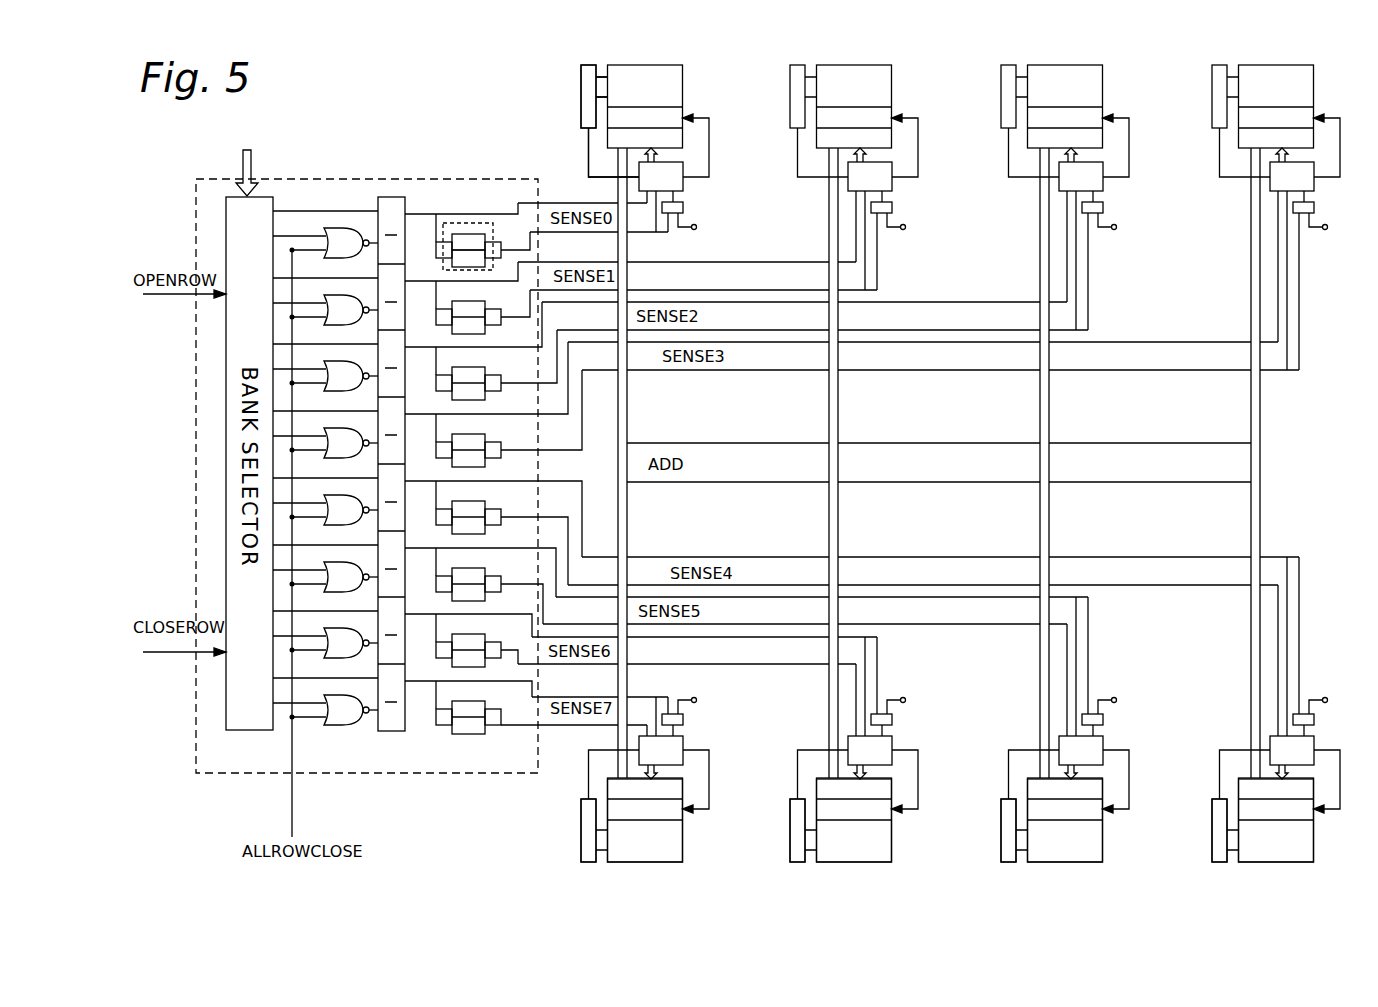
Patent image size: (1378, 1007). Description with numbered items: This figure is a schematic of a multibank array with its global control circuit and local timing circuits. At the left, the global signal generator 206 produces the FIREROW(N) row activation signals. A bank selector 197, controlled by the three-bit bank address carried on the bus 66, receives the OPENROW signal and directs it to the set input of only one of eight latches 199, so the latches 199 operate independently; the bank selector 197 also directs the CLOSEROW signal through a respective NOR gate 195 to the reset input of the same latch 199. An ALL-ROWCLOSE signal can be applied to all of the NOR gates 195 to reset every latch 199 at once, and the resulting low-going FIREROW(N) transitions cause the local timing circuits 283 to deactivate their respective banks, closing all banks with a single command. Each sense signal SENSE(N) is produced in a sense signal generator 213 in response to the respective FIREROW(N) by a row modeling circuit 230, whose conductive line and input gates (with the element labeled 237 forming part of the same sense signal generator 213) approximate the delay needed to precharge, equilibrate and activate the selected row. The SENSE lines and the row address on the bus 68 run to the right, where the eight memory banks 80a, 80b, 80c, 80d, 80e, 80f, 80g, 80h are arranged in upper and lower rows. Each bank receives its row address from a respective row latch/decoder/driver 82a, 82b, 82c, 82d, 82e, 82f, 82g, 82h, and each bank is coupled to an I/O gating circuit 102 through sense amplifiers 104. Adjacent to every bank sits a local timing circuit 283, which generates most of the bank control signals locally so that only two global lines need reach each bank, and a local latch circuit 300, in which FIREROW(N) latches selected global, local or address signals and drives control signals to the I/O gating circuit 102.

The bus 66 is at (238, 160).
The bus 68 is at (605, 430).
The memory bank 80a is at (628, 849).
The memory bank 80b is at (837, 849).
The memory bank 80c is at (1048, 849).
The memory bank 80d is at (1259, 849).
The memory bank 80e is at (645, 106).
The memory bank 80f is at (854, 106).
The memory bank 80g is at (1065, 106).
The memory bank 80h is at (1276, 106).
The row latch/decoder/driver 82a is at (589, 862).
The row latch/decoder/driver 82b is at (798, 862).
The row latch/decoder/driver 82c is at (1009, 862).
The row latch/decoder/driver 82d is at (1220, 862).
The row latch/decoder/driver 82e is at (615, 104).
The row latch/decoder/driver 82f is at (823, 105).
The row latch/decoder/driver 82g is at (1035, 104).
The row latch/decoder/driver 82h is at (1245, 104).
The I/O gating circuit 102 is at (727, 145).
The sense amplifiers 104 is at (583, 121).
The NOR gate 195 is at (340, 228).
The bank selector 197 is at (196, 455).
The latch 199 is at (390, 197).
The global signal generator 206 is at (457, 232).
The sense signal generator 213 is at (457, 228).
The row modeling circuit 230 is at (472, 242).
The transistor 237 is at (482, 257).
The local timing circuit 283 is at (713, 173).
The local latch circuit 300 is at (714, 211).